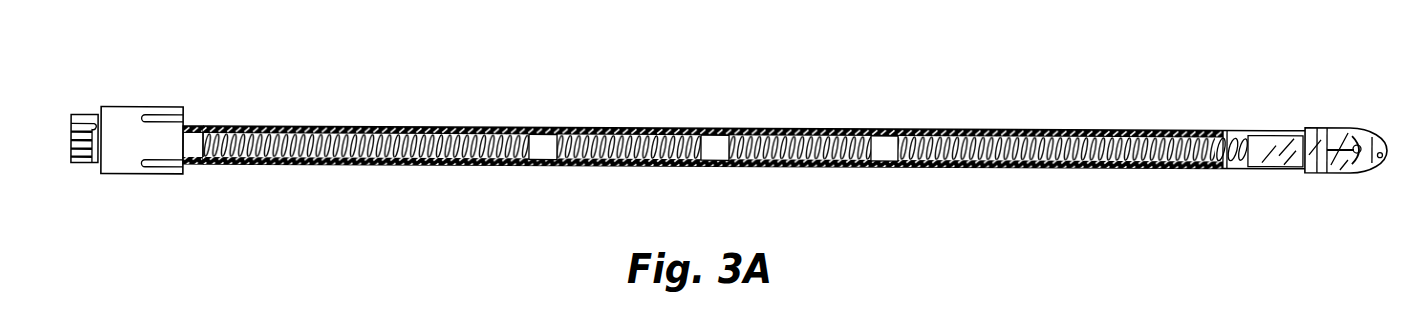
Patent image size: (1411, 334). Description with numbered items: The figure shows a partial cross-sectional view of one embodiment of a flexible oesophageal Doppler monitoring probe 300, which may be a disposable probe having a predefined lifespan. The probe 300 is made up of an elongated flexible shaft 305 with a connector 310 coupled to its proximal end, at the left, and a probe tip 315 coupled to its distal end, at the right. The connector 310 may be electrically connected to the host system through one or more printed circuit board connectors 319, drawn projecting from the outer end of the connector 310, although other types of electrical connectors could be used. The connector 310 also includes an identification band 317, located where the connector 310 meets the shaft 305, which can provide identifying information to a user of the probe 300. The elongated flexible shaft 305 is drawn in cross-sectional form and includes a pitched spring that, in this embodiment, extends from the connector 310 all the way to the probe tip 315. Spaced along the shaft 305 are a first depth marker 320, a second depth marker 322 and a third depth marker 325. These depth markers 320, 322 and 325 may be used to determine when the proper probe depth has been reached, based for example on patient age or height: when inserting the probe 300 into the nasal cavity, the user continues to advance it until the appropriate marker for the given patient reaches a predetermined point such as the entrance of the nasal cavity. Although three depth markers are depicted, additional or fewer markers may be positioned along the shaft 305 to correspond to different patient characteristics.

The probe 300 is at (296, 70).
The elongated flexible shaft 305 is at (767, 126).
The connector 310 is at (122, 107).
The probe tip 315 is at (1333, 123).
The identification band 317 is at (197, 152).
The printed circuit board connector 319 is at (83, 164).
The first depth marker 320 is at (538, 157).
The second depth marker 322 is at (725, 157).
The third depth marker 325 is at (884, 157).